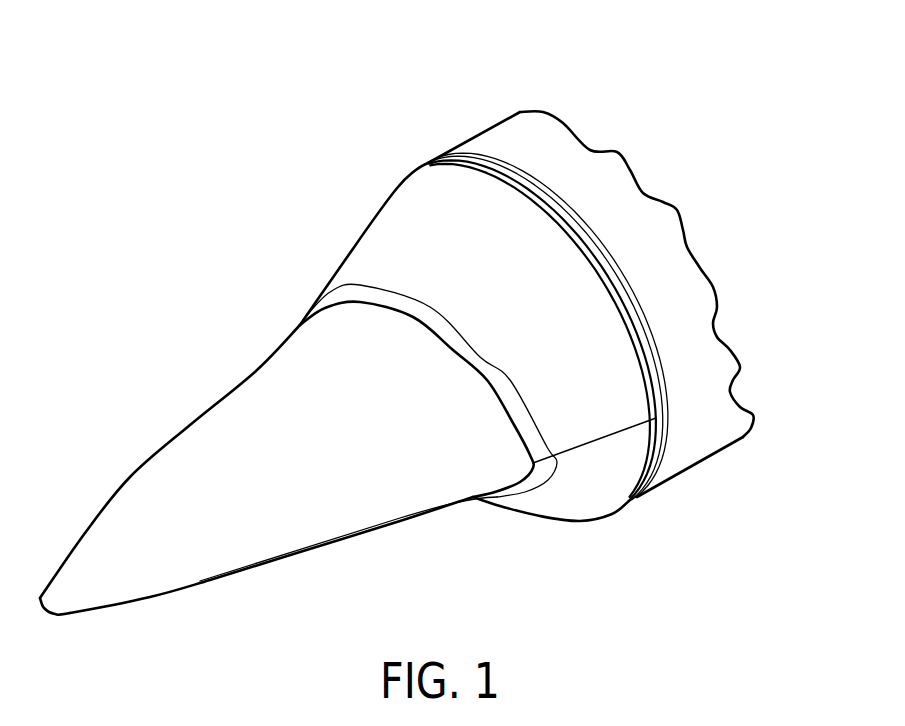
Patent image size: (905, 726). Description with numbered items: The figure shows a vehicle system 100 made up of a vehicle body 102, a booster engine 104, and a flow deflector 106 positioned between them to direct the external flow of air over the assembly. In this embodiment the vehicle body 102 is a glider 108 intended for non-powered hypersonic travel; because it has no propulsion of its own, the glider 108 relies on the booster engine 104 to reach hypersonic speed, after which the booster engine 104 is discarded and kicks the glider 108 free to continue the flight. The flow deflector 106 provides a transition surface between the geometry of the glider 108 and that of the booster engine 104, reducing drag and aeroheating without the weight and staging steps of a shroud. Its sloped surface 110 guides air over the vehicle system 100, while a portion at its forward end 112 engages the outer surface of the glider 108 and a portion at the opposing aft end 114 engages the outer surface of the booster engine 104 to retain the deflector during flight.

The vehicle system 100 is at (635, 93).
The vehicle body 102 is at (125, 469).
The booster engine 104 is at (730, 458).
The flow deflector 106 is at (385, 182).
The glider 108 is at (291, 560).
The sloped surface 110 is at (348, 239).
The forward end 112 is at (483, 515).
The aft end 114 is at (634, 512).